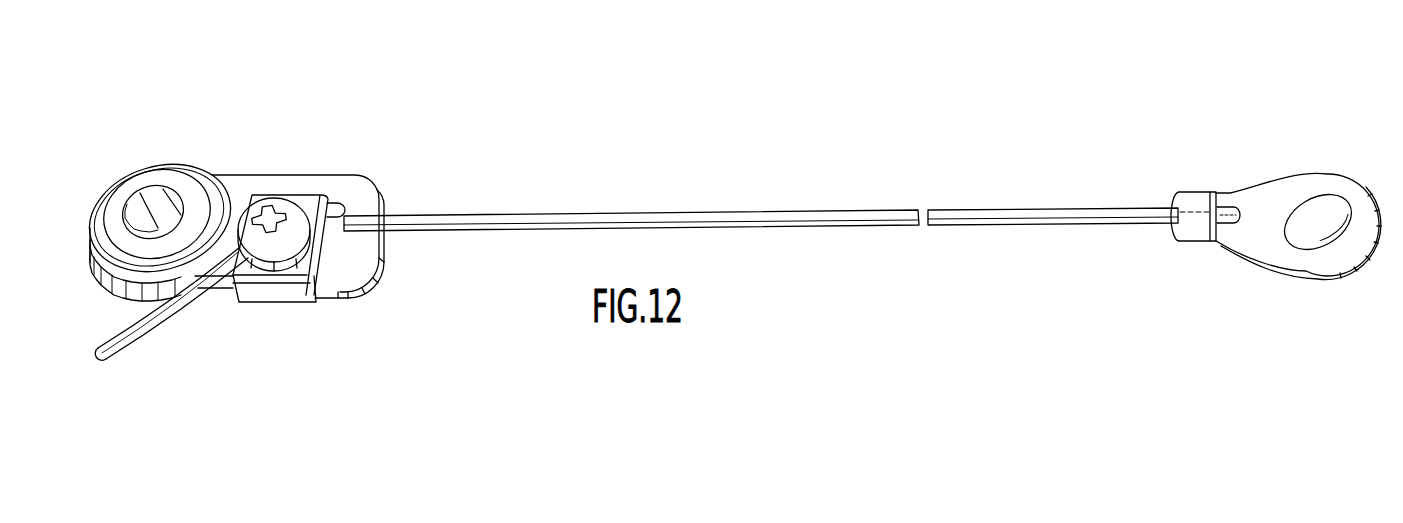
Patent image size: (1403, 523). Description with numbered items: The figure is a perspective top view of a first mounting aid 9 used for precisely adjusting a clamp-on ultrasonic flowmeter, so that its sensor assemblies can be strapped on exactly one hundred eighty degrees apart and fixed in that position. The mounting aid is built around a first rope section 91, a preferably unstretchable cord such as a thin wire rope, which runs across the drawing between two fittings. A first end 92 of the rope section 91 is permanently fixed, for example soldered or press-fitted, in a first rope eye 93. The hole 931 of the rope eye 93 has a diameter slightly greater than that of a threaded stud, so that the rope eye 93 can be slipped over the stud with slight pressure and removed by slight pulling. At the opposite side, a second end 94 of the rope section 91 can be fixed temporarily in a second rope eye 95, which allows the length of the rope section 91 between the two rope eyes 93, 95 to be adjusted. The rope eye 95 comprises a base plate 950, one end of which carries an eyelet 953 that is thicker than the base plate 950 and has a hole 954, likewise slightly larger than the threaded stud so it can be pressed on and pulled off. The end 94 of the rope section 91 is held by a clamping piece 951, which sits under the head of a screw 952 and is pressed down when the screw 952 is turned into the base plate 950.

The first mounting aid 9 is at (747, 177).
The first rope section 91 is at (1047, 215).
The first end 92 is at (1230, 200).
The first rope eye 93 is at (1337, 252).
The hole 931 is at (1325, 210).
The second end 94 is at (137, 327).
The second rope eye 95 is at (355, 133).
The base plate 950 is at (357, 188).
The clamping piece 951 is at (270, 293).
The screw 952 is at (292, 199).
The eyelet 953 is at (193, 172).
The hole 954 is at (158, 197).